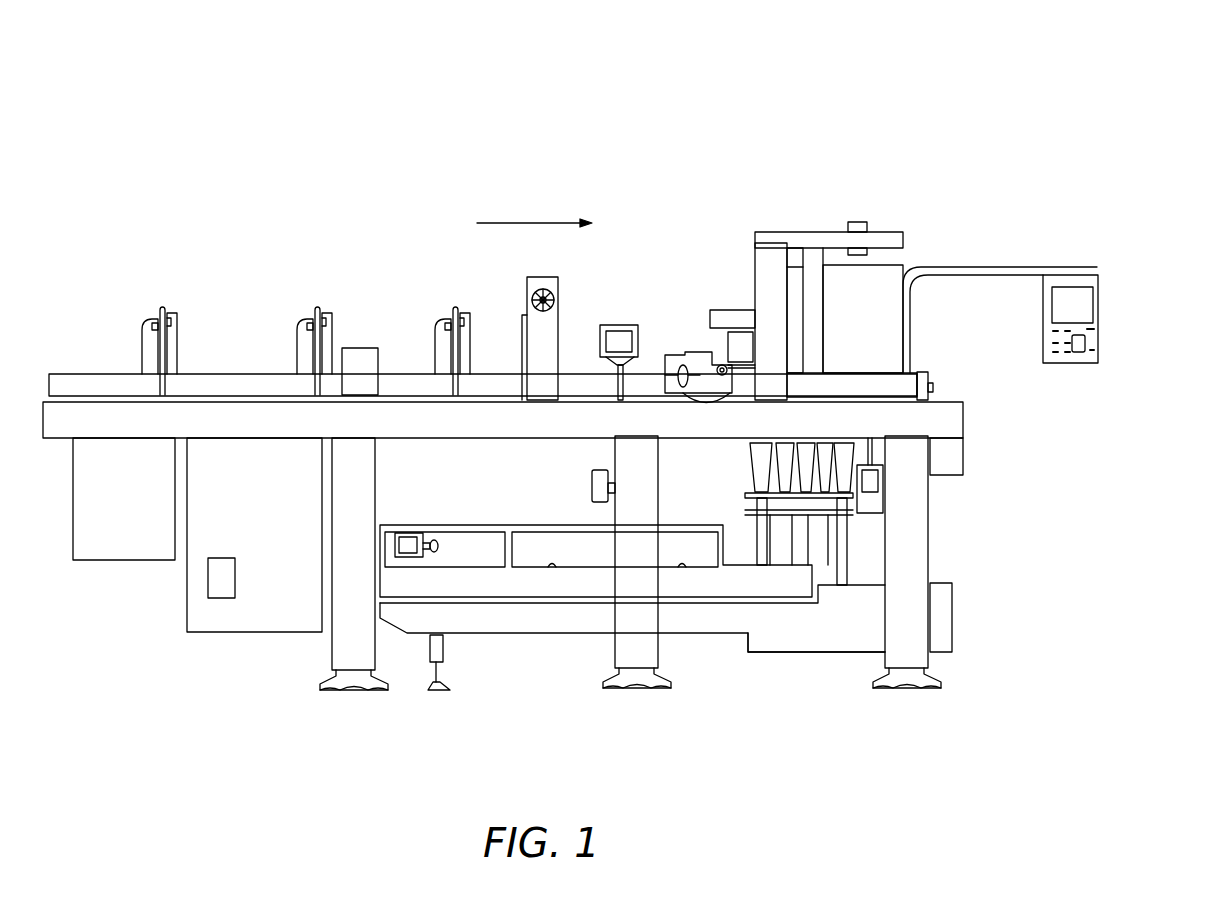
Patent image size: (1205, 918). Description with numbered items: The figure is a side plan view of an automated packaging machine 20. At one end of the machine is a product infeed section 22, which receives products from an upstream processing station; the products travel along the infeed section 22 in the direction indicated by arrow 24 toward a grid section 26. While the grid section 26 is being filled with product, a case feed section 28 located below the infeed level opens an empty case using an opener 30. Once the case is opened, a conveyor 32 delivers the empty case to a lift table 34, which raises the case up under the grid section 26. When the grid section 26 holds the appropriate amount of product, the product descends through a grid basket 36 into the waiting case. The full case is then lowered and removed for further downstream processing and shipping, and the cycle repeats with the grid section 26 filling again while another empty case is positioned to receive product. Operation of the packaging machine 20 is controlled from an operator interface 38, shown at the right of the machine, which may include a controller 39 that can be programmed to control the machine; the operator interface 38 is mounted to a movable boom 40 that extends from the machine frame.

The automated packaging machine 20 is at (538, 128).
The product infeed section 22 is at (128, 293).
The arrow 24 is at (533, 222).
The grid section 26 is at (852, 290).
The case feed section 28 is at (503, 655).
The opener 30 is at (440, 543).
The conveyor 32 is at (588, 558).
The lift table 34 is at (852, 662).
The grid basket 36 is at (843, 477).
The operator interface 38 is at (1077, 307).
The controller 39 is at (1077, 352).
The movable boom 40 is at (1005, 267).